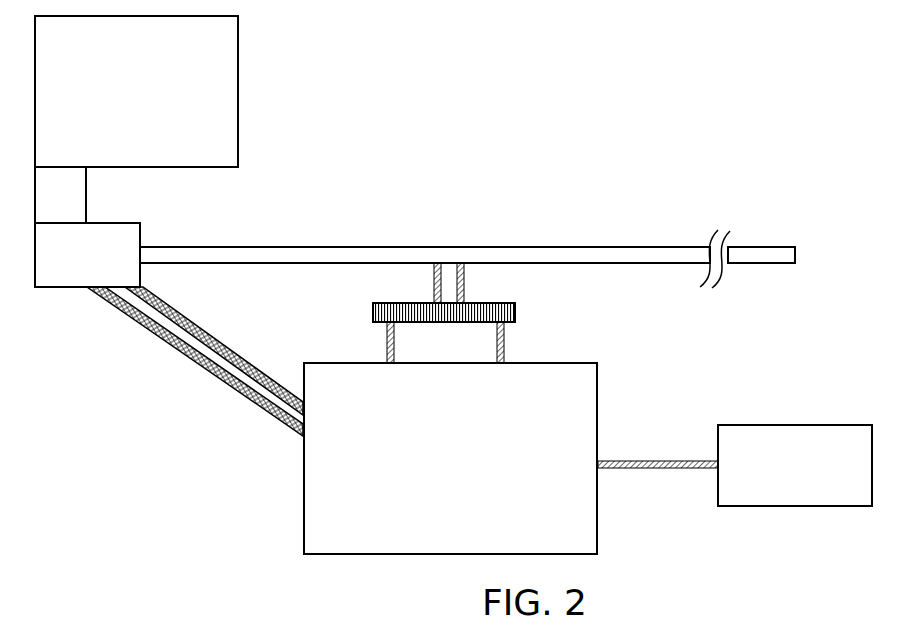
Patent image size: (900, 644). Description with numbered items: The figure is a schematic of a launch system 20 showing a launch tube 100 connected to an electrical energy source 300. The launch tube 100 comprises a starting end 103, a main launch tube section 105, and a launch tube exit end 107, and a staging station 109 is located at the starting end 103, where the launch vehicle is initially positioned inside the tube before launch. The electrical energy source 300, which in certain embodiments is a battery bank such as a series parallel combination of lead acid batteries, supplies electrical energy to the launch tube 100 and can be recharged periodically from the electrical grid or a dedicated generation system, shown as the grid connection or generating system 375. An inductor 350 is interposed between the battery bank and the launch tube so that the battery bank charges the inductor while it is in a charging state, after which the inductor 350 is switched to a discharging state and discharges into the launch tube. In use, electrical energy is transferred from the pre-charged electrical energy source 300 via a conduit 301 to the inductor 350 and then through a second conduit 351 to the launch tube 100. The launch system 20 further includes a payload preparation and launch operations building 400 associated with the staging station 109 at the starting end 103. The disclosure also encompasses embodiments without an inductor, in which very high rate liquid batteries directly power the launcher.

The launch system 20 is at (528, 52).
The launch tube 100 is at (477, 201).
The starting end 103 is at (151, 232).
The main launch tube section 105 is at (667, 247).
The launch tube exit end 107 is at (792, 228).
The staging station 109 is at (107, 267).
The electrical energy source 300 is at (432, 465).
The conduit 301 is at (504, 349).
The inductor 350 is at (515, 308).
The conduit 351 is at (463, 282).
The grid connection or generating system 375 is at (777, 474).
The payload preparation and launch operations building 400 is at (147, 102).